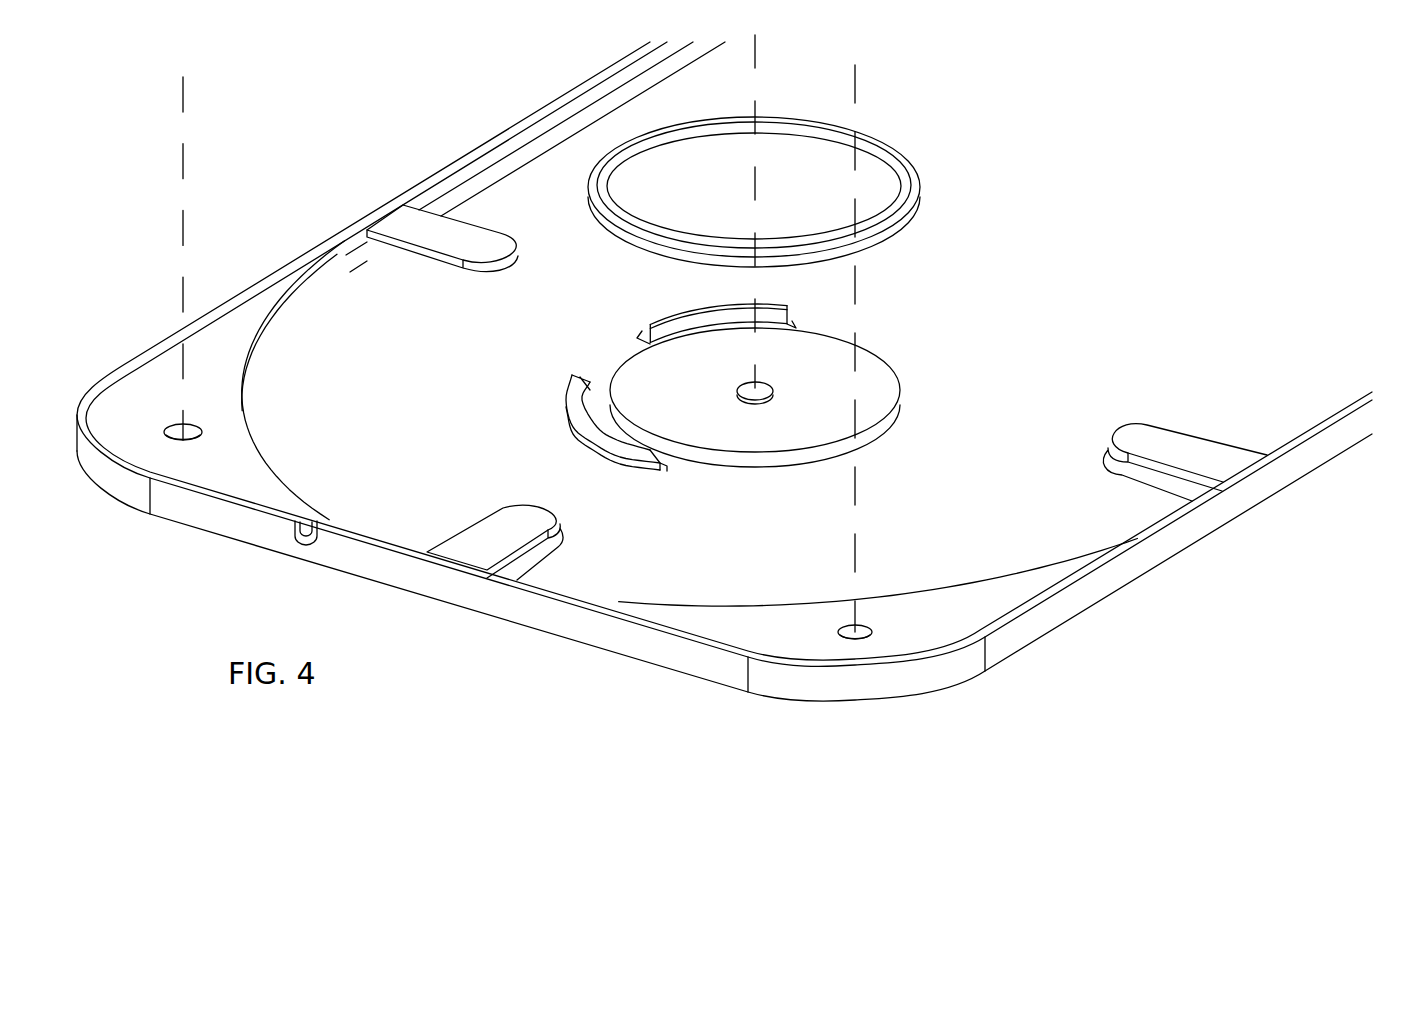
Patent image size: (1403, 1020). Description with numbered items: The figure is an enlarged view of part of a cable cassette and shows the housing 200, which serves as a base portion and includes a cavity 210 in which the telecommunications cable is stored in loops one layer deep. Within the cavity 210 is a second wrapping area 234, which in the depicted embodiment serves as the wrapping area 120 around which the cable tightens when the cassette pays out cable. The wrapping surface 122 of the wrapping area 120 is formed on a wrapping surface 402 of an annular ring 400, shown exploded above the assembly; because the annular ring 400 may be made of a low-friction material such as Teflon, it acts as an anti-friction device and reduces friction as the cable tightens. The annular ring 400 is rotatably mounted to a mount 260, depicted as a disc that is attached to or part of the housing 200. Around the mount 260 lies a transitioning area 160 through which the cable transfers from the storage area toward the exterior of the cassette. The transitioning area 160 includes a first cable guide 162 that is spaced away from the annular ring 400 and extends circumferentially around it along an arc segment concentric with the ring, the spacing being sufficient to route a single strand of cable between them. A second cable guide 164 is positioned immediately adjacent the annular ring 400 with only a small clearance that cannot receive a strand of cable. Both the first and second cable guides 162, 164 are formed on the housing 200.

The wrapping area 120 is at (710, 377).
The wrapping surface 122 is at (897, 192).
The transitioning area 160 is at (551, 401).
The first cable guide 162 is at (650, 317).
The second cable guide 164 is at (588, 427).
The housing 200 is at (378, 205).
The cavity 210 is at (563, 277).
The second wrapping area 234 is at (710, 377).
The mount 260 is at (742, 457).
The annular ring 400 is at (897, 192).
The wrapping surface of the annular ring 402 is at (883, 235).